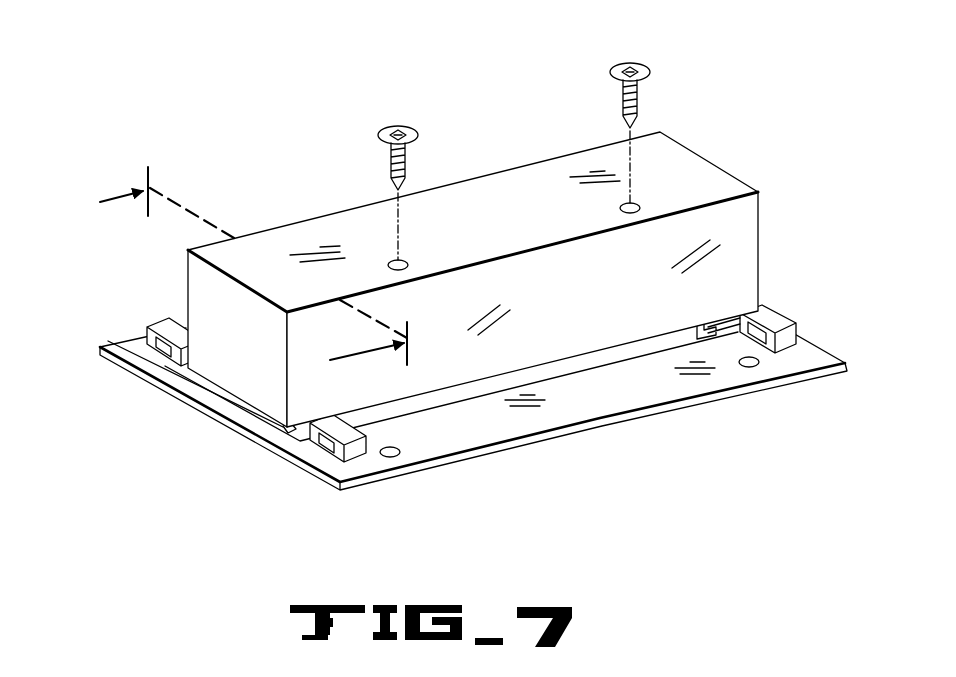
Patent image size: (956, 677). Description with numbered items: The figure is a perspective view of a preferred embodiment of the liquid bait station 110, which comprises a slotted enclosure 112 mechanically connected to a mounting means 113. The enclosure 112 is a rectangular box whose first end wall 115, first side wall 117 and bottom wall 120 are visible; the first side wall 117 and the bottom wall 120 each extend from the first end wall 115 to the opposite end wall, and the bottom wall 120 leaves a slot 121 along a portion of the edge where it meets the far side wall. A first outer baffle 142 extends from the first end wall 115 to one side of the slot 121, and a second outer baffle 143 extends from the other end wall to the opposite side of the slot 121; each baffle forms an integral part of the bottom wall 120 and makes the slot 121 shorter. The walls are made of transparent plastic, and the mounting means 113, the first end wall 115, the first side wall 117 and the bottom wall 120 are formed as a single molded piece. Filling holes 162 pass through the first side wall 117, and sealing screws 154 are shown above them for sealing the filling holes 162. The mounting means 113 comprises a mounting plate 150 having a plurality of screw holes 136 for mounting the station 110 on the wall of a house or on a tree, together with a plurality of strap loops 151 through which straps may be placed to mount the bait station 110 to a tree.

The bait station 110 is at (197, 107).
The slotted enclosure 112 is at (718, 150).
The mounting means 113 is at (338, 487).
The first end wall 115 is at (223, 372).
The first side wall 117 is at (357, 222).
The bottom wall 120 is at (745, 245).
The slot 121 is at (590, 357).
The screw holes 136 is at (400, 456).
The first outer baffle 142 is at (287, 433).
The second outer baffle 143 is at (728, 317).
The mounting plate 150 is at (672, 382).
The strap loops 151 is at (160, 317).
The sealing screws 154 is at (412, 128).
The filling holes 162 is at (412, 262).